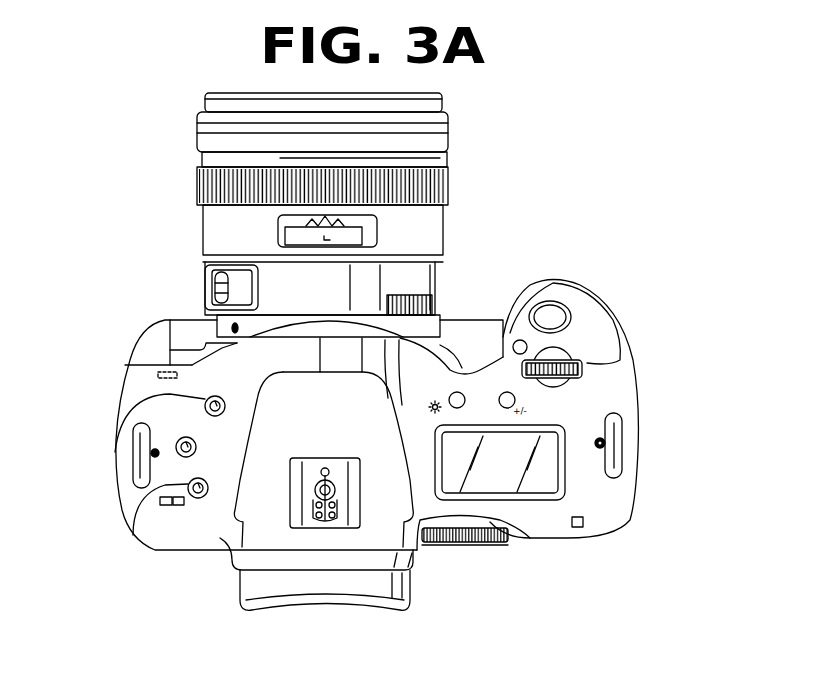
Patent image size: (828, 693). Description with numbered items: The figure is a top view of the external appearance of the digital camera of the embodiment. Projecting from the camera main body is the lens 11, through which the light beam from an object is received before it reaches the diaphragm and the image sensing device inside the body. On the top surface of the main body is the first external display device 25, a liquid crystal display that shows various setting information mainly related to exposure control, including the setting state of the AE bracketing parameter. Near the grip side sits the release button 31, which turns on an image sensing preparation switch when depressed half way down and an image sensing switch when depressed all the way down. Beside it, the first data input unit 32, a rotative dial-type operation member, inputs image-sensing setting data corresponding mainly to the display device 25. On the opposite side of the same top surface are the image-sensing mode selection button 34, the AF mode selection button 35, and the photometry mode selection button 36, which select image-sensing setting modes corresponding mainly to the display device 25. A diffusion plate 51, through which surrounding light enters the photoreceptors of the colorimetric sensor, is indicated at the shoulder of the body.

The lens 11 is at (445, 200).
The first external display device 25 is at (550, 480).
The release button 31 is at (562, 316).
The first data input unit 32 is at (584, 370).
The image-sensing mode selection button 34 is at (203, 401).
The AF mode selection button 35 is at (176, 445).
The photometry mode selection button 36 is at (130, 523).
The diffusion plate 51 is at (148, 372).